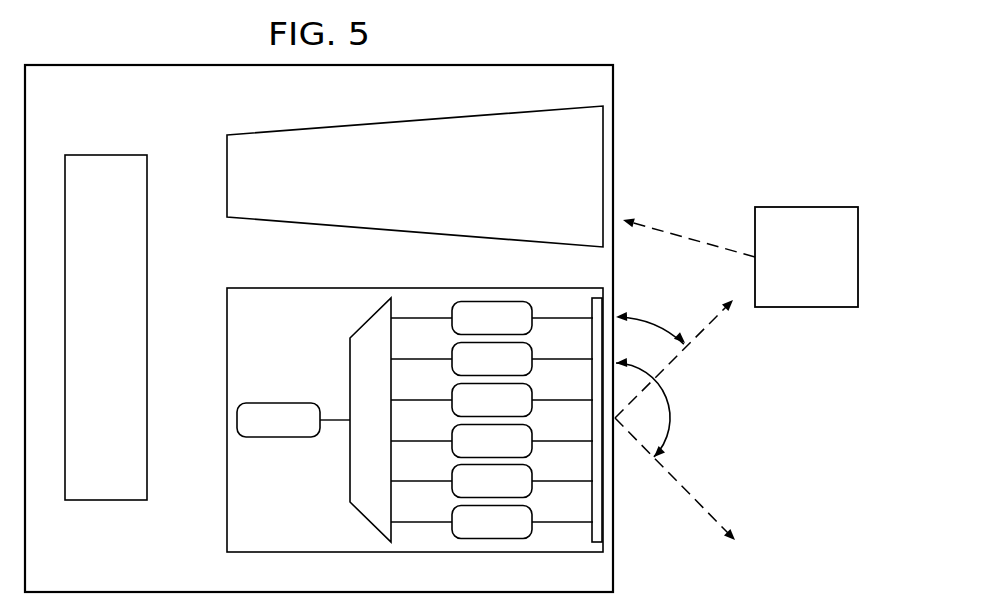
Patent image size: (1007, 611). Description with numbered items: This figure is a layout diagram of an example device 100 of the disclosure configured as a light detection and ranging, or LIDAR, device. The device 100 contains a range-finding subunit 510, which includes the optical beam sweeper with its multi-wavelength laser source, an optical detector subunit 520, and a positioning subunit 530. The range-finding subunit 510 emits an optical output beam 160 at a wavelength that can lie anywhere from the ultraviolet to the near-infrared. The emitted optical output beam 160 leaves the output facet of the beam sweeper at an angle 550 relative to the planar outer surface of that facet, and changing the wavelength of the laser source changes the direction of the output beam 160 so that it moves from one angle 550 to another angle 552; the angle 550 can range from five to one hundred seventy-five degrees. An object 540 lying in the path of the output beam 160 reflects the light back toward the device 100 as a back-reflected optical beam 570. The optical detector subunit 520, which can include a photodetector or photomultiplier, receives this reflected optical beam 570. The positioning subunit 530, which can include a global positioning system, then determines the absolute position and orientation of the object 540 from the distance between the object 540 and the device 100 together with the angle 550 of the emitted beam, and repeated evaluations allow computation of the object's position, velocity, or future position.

The device 100 is at (756, 69).
The range-finding subunit 510 is at (308, 361).
The optical detector subunit 520 is at (435, 190).
The positioning subunit 530 is at (125, 339).
The object 540 is at (824, 272).
The angle 550 is at (654, 322).
The angle 552 is at (671, 421).
The optical beam 570 is at (681, 236).
The optical output beam 160 is at (704, 331).